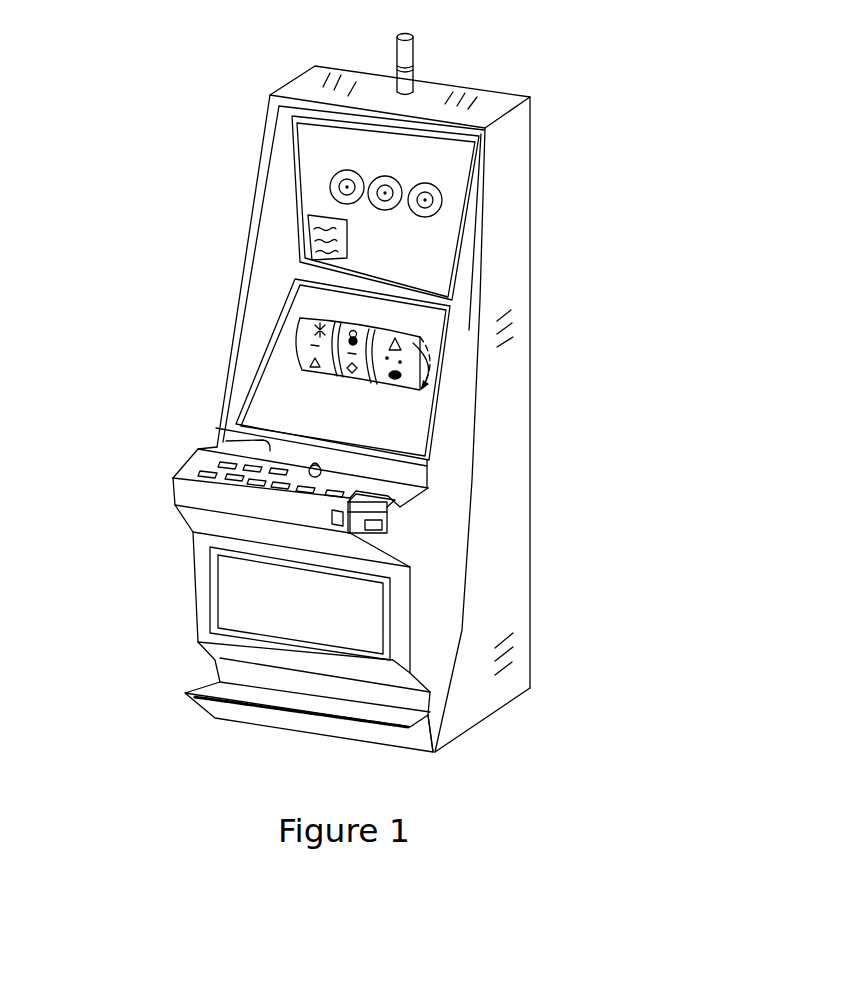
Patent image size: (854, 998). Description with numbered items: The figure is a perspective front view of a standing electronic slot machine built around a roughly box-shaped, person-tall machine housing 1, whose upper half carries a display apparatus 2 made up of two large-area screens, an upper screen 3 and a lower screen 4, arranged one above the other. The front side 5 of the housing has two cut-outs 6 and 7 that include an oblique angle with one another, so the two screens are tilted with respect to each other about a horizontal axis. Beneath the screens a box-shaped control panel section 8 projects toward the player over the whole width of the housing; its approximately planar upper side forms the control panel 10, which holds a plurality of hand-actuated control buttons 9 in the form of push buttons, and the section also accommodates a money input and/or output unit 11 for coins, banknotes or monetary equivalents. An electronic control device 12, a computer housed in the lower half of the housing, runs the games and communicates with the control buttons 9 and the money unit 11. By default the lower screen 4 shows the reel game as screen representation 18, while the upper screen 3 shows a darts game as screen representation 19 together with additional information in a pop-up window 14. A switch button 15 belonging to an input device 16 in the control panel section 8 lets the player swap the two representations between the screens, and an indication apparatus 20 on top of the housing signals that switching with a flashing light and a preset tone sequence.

The machine housing 1 is at (290, 73).
The display apparatus 2 is at (245, 296).
The upper screen 3 is at (448, 227).
The lower screen 4 is at (428, 388).
The front side 5 is at (232, 357).
The cut-out 6 is at (447, 143).
The cut-out 7 is at (430, 300).
The control panel section 8 is at (190, 465).
The control buttons 9 is at (222, 493).
The control panel 10 is at (219, 483).
The money input and/or output unit 11 is at (372, 548).
The electronic control device 12 is at (222, 611).
The pop-up window 14 is at (315, 216).
The switch button 15 is at (278, 453).
The input device 16 is at (285, 455).
The screen representation 18 is at (283, 352).
The screen representation 19 is at (310, 176).
The indication apparatus 20 is at (414, 52).